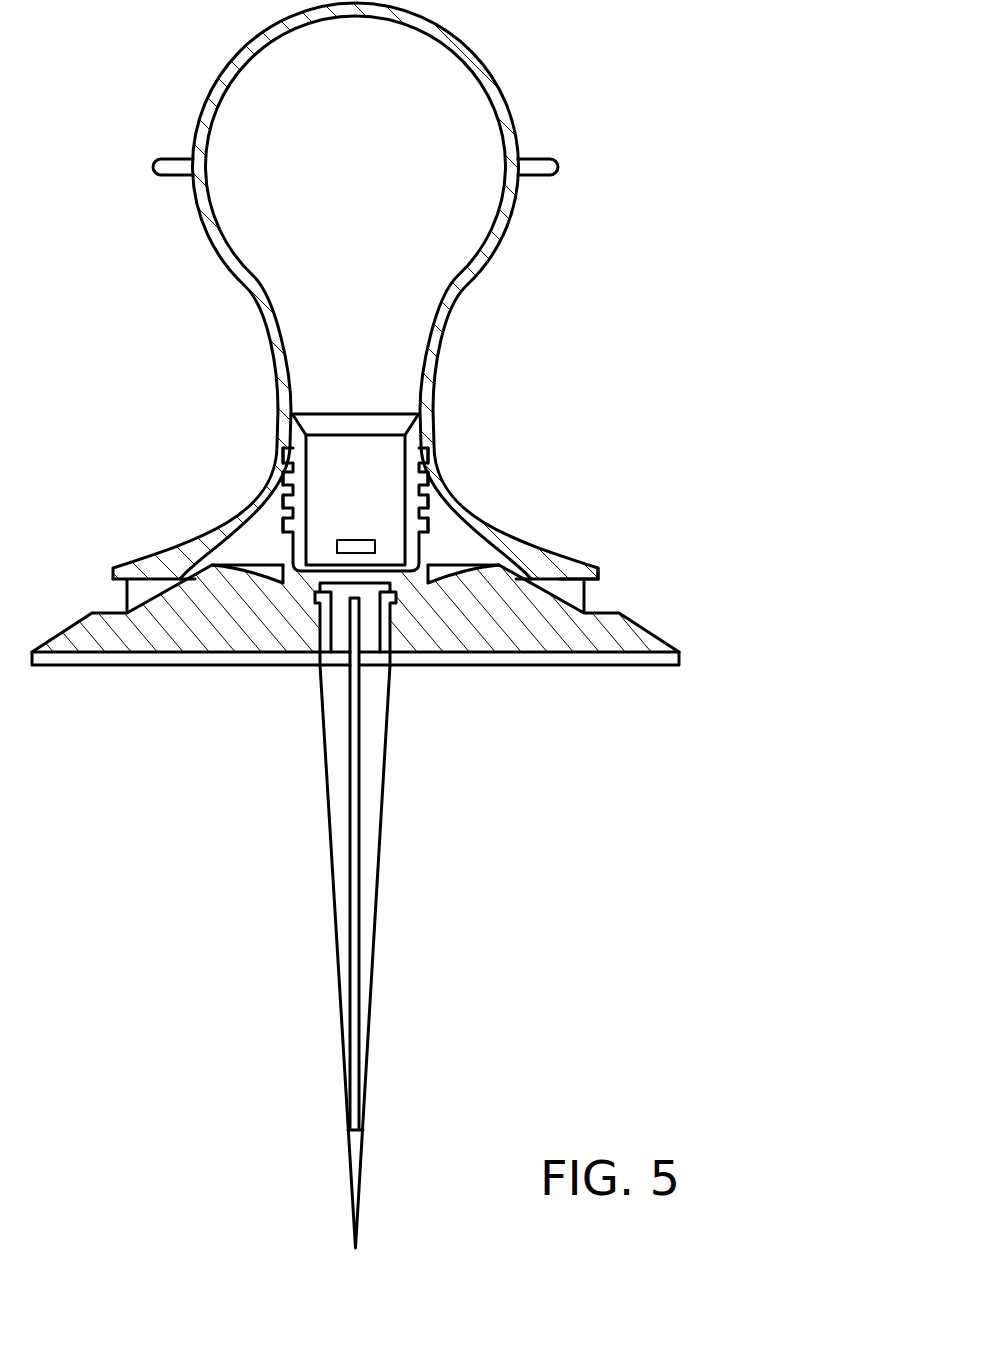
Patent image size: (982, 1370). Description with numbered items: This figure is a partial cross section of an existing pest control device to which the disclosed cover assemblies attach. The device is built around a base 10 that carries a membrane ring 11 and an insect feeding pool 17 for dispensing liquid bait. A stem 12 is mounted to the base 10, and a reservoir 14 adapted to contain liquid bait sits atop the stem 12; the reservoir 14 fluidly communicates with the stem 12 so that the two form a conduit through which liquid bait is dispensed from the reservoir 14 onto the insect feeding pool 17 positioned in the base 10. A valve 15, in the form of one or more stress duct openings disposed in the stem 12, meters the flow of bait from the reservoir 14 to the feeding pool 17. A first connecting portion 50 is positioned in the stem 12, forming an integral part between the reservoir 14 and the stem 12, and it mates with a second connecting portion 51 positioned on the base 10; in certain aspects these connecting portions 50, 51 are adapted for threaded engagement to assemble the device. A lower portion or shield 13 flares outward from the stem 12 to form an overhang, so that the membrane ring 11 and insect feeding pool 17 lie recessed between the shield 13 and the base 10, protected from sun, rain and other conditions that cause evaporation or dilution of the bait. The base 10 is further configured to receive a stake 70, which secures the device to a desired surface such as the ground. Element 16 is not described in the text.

The base 10 is at (630, 633).
The membrane ring 11 is at (555, 589).
The stem 12 is at (420, 400).
The lower portion/shield 13 is at (577, 573).
The reservoir 14 is at (507, 123).
The valve 15 is at (378, 548).
The tab 16 is at (168, 160).
The insect feeding pool 17 is at (253, 572).
The first connecting portion 50 is at (293, 435).
The second connecting portion 51 is at (280, 517).
The stake 70 is at (372, 830).